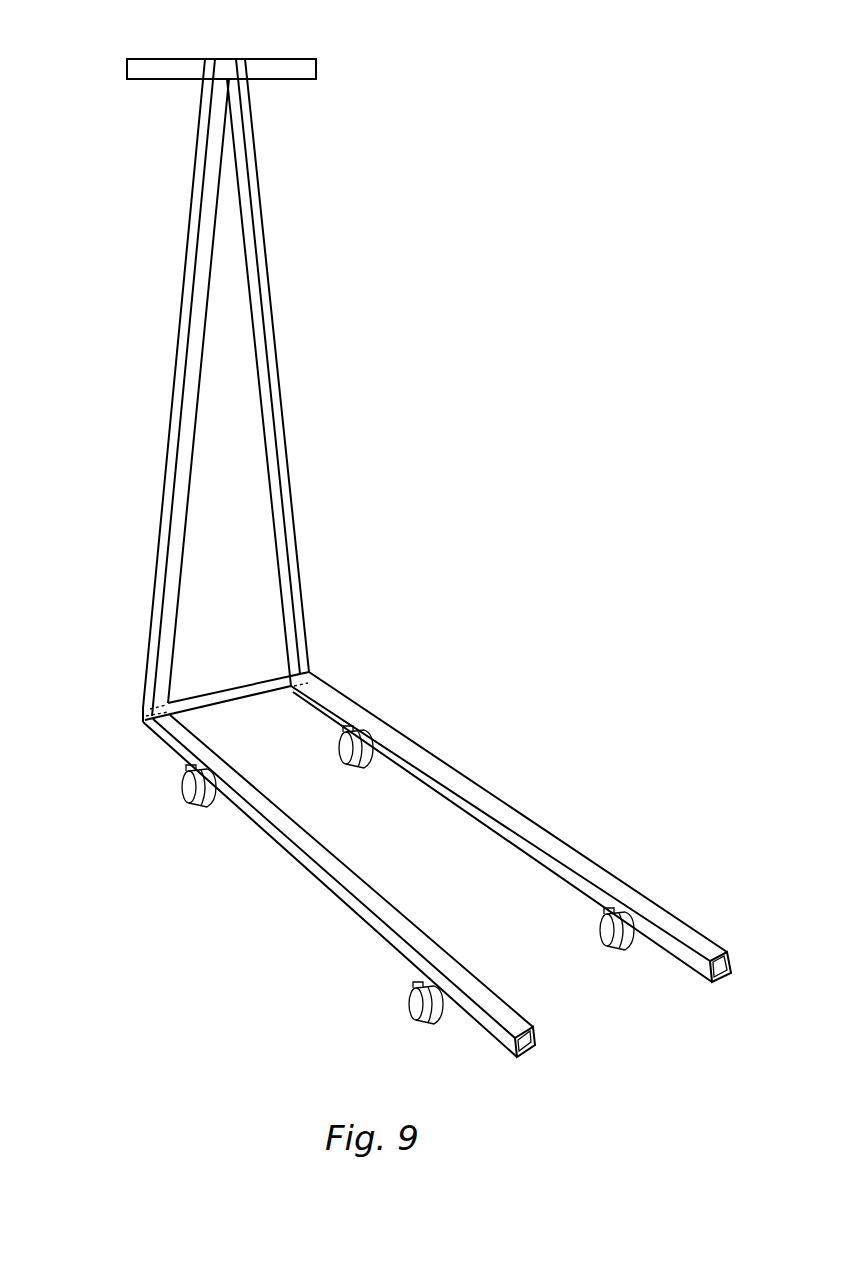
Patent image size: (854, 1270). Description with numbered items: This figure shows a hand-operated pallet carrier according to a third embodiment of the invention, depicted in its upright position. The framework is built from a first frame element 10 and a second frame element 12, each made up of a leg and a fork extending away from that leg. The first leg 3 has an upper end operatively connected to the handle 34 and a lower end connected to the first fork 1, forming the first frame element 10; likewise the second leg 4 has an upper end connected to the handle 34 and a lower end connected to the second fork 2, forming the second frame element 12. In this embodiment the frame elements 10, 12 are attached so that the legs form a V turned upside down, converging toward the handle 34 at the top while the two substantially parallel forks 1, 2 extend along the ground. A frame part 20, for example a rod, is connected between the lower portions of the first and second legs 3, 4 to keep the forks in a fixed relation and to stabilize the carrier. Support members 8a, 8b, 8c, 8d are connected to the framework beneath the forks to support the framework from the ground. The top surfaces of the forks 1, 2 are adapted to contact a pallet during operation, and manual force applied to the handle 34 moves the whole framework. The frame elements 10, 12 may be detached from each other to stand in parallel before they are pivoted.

The handle 34 is at (272, 58).
The second leg 4 is at (181, 366).
The first leg 3 is at (273, 352).
The second frame element 12 is at (191, 387).
The first frame element 10 is at (426, 744).
The frame part 20 is at (252, 688).
The first fork 1 is at (497, 790).
The second fork 2 is at (306, 874).
The support member 8a is at (340, 748).
The support member 8b is at (601, 931).
The support member 8c is at (410, 1003).
The support member 8d is at (183, 790).